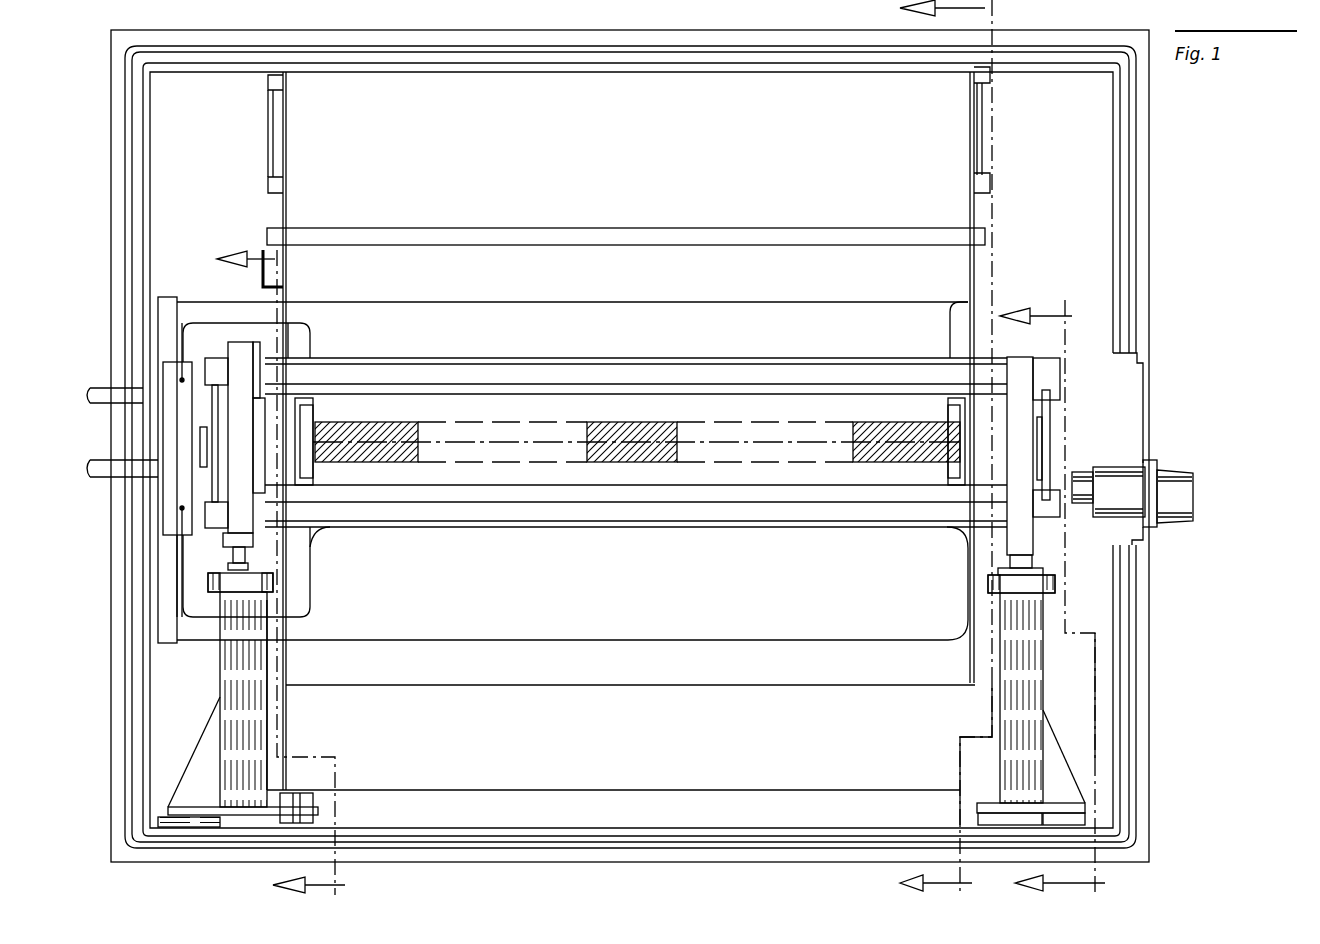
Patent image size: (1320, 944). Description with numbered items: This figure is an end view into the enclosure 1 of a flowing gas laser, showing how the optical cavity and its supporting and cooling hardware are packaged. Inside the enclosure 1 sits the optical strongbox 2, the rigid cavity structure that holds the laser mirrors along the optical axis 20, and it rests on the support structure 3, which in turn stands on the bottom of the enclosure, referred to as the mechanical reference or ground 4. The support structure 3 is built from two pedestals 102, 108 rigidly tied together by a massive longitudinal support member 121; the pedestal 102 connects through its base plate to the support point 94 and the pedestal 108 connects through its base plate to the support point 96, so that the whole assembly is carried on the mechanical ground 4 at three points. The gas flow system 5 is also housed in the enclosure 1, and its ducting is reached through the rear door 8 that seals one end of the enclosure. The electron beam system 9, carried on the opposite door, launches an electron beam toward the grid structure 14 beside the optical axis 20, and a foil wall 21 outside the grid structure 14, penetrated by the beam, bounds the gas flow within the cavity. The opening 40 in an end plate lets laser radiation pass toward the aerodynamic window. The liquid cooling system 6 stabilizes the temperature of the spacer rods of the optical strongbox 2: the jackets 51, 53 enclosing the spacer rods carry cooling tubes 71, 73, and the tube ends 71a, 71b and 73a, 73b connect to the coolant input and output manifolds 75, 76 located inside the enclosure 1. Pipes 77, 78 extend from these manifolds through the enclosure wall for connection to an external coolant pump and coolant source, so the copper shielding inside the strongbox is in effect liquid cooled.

The enclosure 1 is at (111, 97).
The optical strongbox 2 is at (925, 312).
The support structure 3 is at (475, 805).
The mechanical reference or ground 4 is at (383, 823).
The gas flow system 5 is at (1010, 188).
The liquid cooling system 6 is at (199, 282).
The rear door 8 is at (1060, 597).
The electron beam system 9 is at (281, 573).
The grid structure 14 is at (680, 432).
The optical axis 20 is at (440, 436).
The foil wall 21 is at (592, 405).
The opening 40 is at (1108, 467).
The jacket 51 is at (678, 372).
The jacket 53 is at (588, 527).
The cooling tube 71 is at (405, 358).
The end of cooling tube 71 71a is at (310, 330).
The end of cooling tube 71 71b is at (471, 303).
The cooling tube 73 is at (402, 527).
The end of cooling tube 73 73a is at (322, 532).
The end of cooling tube 73 73b is at (432, 640).
The coolant input manifold 75 is at (186, 536).
The coolant output manifold 76 is at (168, 297).
The pipe 77 is at (97, 386).
The pipe 78 is at (95, 480).
The support point 94 is at (1112, 812).
The support point 96 is at (145, 806).
The pedestal 102 is at (234, 680).
The pedestal 108 is at (1035, 672).
The longitudinal support member 121 is at (610, 685).